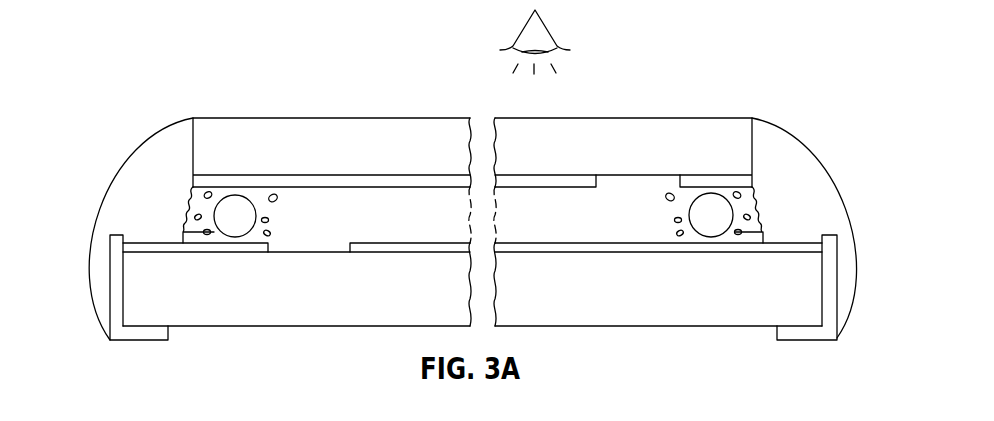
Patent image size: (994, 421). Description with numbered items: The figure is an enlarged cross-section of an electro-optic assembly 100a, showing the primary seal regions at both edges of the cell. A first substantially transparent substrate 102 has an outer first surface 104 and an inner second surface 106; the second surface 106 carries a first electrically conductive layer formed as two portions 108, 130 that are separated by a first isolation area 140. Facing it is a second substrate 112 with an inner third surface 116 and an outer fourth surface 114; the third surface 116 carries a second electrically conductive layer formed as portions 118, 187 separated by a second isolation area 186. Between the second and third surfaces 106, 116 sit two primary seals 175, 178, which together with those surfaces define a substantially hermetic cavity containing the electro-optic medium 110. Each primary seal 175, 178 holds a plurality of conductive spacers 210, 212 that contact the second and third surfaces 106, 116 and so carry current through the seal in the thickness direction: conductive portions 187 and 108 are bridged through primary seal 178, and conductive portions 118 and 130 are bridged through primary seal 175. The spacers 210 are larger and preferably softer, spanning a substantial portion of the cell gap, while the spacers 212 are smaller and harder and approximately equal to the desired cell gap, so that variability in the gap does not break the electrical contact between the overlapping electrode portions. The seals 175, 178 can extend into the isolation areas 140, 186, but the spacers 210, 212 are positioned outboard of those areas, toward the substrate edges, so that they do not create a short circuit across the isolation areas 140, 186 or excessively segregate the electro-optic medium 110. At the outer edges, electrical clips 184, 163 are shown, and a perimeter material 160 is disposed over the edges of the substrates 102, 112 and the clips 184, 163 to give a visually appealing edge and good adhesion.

The electro-optic assembly 100a is at (133, 93).
The perimeter material 160 is at (173, 147).
The first substantially transparent substrate 102 is at (372, 147).
The second surface 106 is at (413, 175).
The first electrically conductive layer portion 108 is at (530, 182).
The first electrically conductive layer portion 130 is at (720, 182).
The primary seal 175 is at (617, 200).
The primary seal 178 is at (327, 200).
The first isolation area 140 is at (646, 166).
The first surface 104 is at (558, 118).
The conductive spacer 210 is at (240, 200).
The conductive spacer 212 is at (182, 232).
The electro-optic medium 110 is at (453, 228).
The second substrate 112 is at (710, 300).
The fourth surface 114 is at (193, 327).
The second electrically conductive layer portion 187 is at (157, 248).
The third surface 116 is at (403, 252).
The second electrically conductive layer portion 118 is at (558, 248).
The second isolation area 186 is at (308, 272).
The electrical clip 184 is at (133, 342).
The electrical clip 163 is at (798, 342).